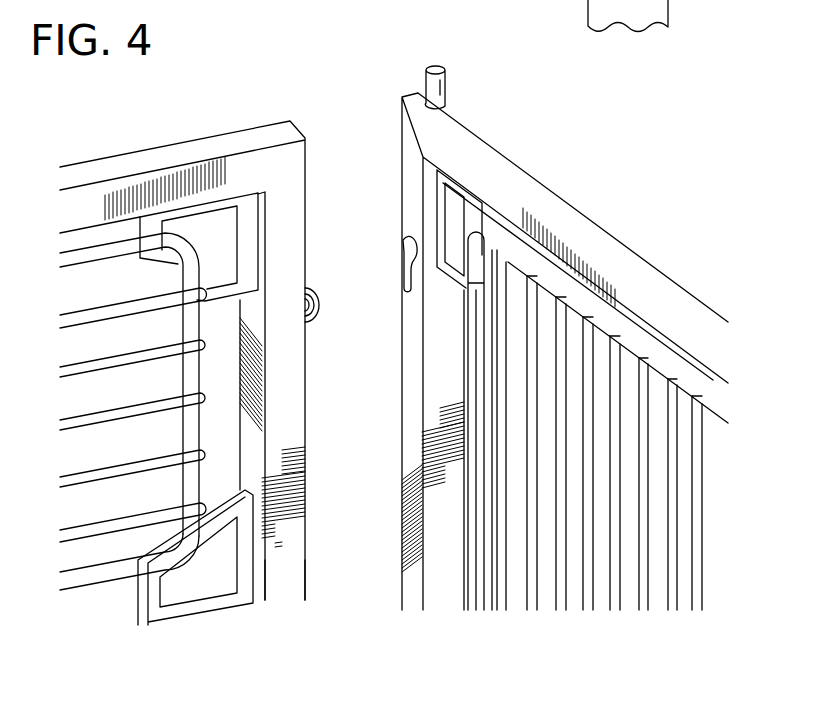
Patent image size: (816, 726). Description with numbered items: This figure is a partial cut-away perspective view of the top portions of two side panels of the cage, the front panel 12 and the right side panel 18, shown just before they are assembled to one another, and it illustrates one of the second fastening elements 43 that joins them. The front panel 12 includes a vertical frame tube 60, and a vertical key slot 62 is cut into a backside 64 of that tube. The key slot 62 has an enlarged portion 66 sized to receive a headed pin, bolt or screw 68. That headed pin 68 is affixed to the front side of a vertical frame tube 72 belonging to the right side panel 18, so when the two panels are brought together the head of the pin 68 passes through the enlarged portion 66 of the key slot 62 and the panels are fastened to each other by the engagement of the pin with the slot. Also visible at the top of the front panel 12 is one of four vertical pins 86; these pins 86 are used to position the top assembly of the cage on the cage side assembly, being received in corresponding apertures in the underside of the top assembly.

The front panel 12 is at (590, 388).
The right side panel 18 is at (100, 172).
The second fastening element 43 is at (356, 302).
The vertical frame tube 60 is at (440, 573).
The vertical key slot 62 is at (410, 277).
The backside 64 is at (412, 168).
The enlarged portion 66 is at (402, 240).
The headed pin, bolt or screw 68 is at (318, 319).
The vertical frame tube 72 is at (278, 563).
The vertical pin 86 is at (447, 80).